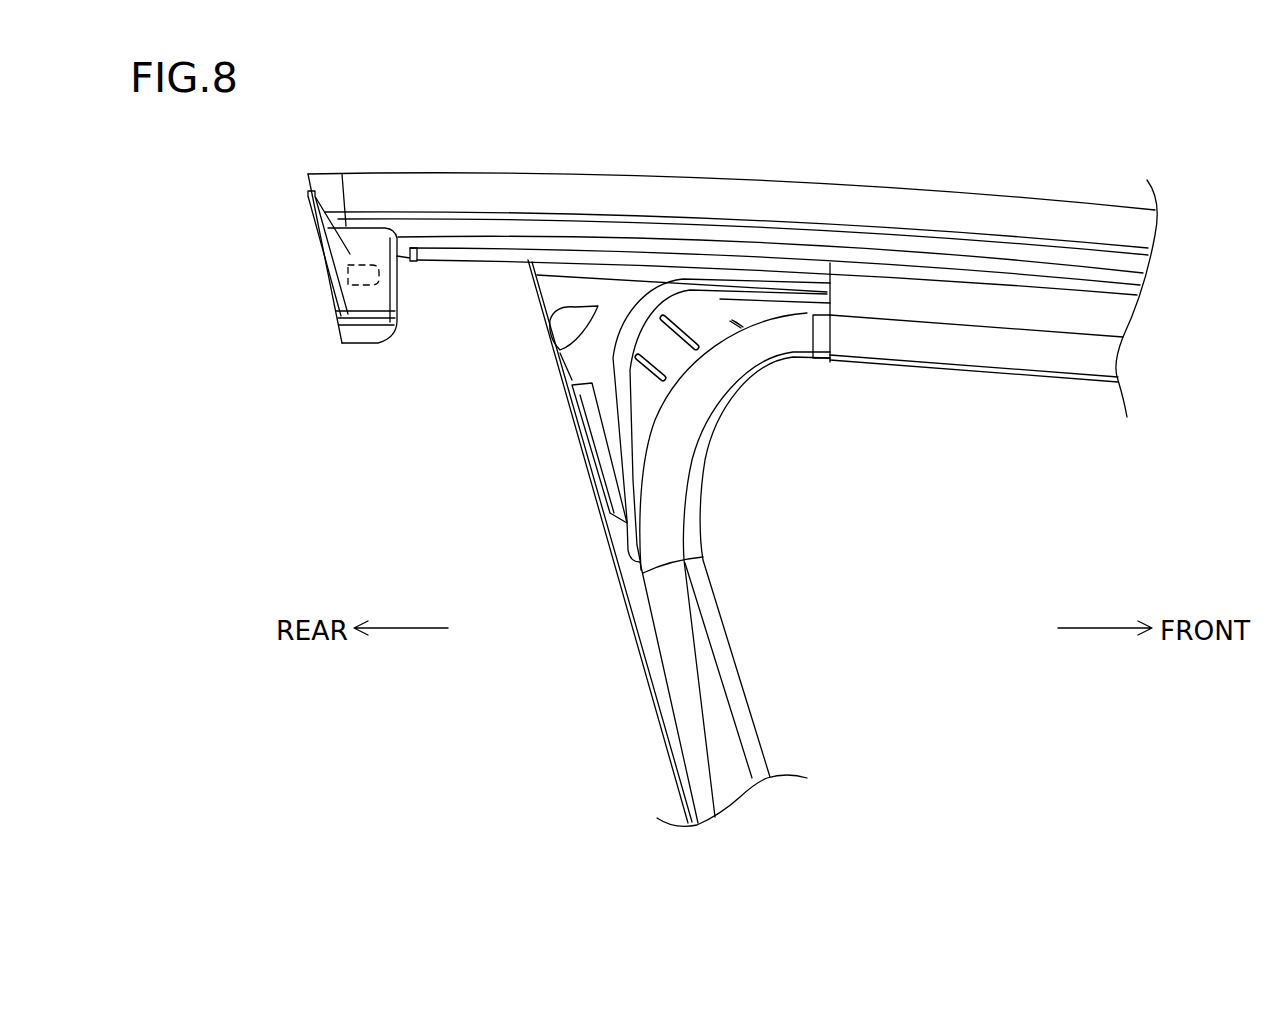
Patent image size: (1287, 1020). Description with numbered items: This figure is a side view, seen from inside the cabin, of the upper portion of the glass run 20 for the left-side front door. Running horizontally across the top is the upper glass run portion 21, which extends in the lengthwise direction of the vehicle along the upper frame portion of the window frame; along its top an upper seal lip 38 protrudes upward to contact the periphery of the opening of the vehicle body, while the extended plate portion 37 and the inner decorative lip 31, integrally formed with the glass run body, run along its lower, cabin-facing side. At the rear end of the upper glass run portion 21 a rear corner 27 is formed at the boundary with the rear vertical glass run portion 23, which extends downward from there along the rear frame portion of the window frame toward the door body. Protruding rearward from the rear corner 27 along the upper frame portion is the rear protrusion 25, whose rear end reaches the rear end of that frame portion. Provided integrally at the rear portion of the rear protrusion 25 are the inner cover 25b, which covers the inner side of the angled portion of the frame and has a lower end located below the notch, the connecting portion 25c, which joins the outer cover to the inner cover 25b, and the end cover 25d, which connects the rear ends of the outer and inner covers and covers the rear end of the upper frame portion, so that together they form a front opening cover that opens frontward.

The glass run 20 is at (989, 186).
The upper glass run portion 21 is at (1062, 220).
The rear vertical glass run portion 23 is at (708, 693).
The rear protrusion 25 is at (309, 252).
The inner cover 25b is at (362, 296).
The connecting portion 25c is at (348, 272).
The end cover 25d is at (332, 249).
The rear corner 27 is at (622, 300).
The inner decorative lip 31 is at (1035, 357).
The extended plate portion 37 is at (1110, 313).
The upper seal lip 38 is at (870, 200).